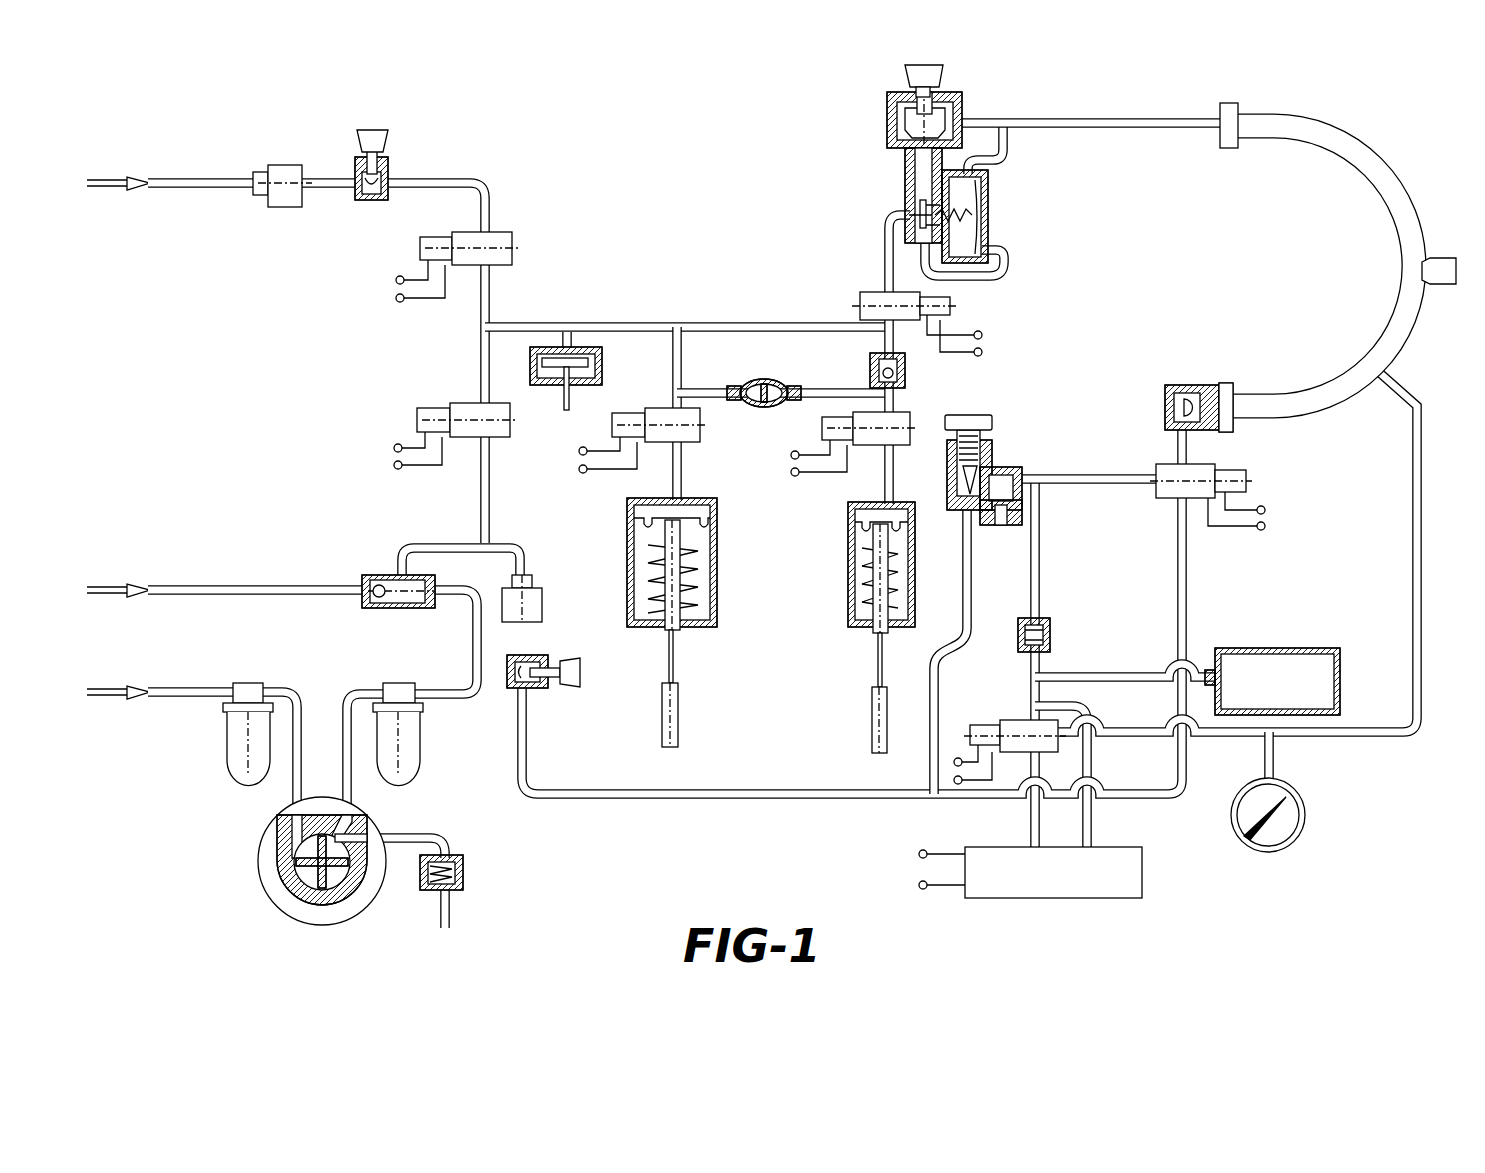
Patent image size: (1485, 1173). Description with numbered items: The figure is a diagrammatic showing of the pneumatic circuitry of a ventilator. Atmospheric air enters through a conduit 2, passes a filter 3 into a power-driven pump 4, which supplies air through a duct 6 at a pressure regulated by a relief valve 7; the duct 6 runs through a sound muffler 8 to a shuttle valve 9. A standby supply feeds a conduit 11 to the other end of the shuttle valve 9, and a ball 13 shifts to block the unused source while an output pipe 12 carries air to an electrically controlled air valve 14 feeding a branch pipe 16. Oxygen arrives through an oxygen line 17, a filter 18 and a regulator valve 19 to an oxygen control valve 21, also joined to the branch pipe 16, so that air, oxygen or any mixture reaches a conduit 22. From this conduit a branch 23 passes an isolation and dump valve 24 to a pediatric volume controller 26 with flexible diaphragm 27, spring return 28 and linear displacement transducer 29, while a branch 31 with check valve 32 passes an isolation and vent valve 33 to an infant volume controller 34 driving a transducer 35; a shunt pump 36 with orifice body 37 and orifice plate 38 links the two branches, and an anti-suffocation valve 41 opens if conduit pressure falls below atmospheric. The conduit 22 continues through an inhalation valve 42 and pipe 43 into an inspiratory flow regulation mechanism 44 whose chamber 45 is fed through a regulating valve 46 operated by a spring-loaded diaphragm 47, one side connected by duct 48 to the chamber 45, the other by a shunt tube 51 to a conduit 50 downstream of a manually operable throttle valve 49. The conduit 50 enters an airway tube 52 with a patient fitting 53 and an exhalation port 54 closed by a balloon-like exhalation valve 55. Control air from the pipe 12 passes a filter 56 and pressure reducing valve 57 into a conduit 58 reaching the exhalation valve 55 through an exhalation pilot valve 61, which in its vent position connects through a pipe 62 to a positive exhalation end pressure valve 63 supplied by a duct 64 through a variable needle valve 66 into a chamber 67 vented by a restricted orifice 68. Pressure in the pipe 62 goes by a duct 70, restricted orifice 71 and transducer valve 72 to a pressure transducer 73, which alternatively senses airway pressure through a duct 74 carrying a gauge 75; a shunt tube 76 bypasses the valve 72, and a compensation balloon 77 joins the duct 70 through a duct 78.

The conduit 2 is at (192, 688).
The filter 3 is at (228, 744).
The power-driven pump 4 is at (300, 888).
The duct 6 is at (340, 768).
The relief valve 7 is at (462, 856).
The sound muffler 8 is at (416, 756).
The shuttle valve 9 is at (380, 606).
The conduit 11 is at (288, 586).
The output pipe 12 is at (428, 545).
The ball 13 is at (393, 588).
The air valve 14 is at (500, 436).
The branch pipe 16 is at (480, 362).
The oxygen line 17 is at (218, 178).
The filter 18 is at (294, 166).
The regulator valve 19 is at (390, 170).
The oxygen control valve 21 is at (508, 242).
The conduit 22 is at (558, 322).
The branch 23 is at (675, 376).
The isolation and dump valve 24 is at (698, 438).
The pediatric volume controller 26 is at (675, 564).
The flexible diaphragm 27 is at (702, 540).
The spring return 28 is at (660, 570).
The linear displacement electrical transducer 29 is at (678, 716).
The branch 31 is at (884, 342).
The check valve 32 is at (906, 378).
The isolation and vent valve 33 is at (908, 450).
The infant volume controller 34 is at (850, 584).
The linear displacement electrical transducer 35 is at (872, 716).
The shunt pump 36 is at (822, 374).
The orifice body 37 is at (763, 394).
The orifice plate 38 is at (748, 410).
The anti-suffocation valve 41 is at (600, 374).
The inhalation valve 42 is at (858, 292).
The pipe 43 is at (884, 242).
The inspiratory flow regulation mechanism 44 is at (927, 106).
The chamber 45 is at (897, 195).
The regulating valve 46 is at (910, 200).
The spring-loaded diaphragm 47 is at (982, 254).
The duct 48 is at (1004, 282).
The manually operable throttle valve 49 is at (905, 102).
The conduit 50 is at (1082, 102).
The shunt tube 51 is at (1008, 150).
The airway tube 52 is at (1398, 228).
The fitting 53 is at (1440, 258).
The exhalation port 54 is at (1171, 389).
The exhalation valve 55 is at (1190, 396).
The filter 56 is at (544, 608).
The pressure reducing valve 57 is at (540, 690).
The conduit 58 is at (626, 792).
The exhalation pilot valve 61 is at (1172, 500).
The pipe 62 is at (1096, 486).
The positive exhalation end pressure valve 63 is at (992, 445).
The duct 64 is at (962, 640).
The variable needle valve 66 is at (976, 416).
The chamber 67 is at (1020, 505).
The restricted orifice 68 is at (998, 524).
The duct 70 is at (1040, 668).
The restricted orifice 71 is at (1045, 622).
The transducer valve 72 is at (1010, 720).
The pressure transducer 73 is at (1027, 898).
The duct 74 is at (1212, 740).
The gauge 75 is at (1300, 812).
The shunt tube 76 is at (1090, 775).
The balloon 77 is at (1276, 646).
The duct 78 is at (1136, 672).